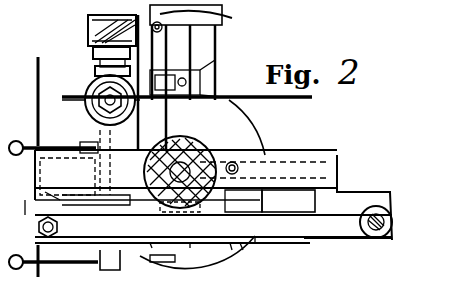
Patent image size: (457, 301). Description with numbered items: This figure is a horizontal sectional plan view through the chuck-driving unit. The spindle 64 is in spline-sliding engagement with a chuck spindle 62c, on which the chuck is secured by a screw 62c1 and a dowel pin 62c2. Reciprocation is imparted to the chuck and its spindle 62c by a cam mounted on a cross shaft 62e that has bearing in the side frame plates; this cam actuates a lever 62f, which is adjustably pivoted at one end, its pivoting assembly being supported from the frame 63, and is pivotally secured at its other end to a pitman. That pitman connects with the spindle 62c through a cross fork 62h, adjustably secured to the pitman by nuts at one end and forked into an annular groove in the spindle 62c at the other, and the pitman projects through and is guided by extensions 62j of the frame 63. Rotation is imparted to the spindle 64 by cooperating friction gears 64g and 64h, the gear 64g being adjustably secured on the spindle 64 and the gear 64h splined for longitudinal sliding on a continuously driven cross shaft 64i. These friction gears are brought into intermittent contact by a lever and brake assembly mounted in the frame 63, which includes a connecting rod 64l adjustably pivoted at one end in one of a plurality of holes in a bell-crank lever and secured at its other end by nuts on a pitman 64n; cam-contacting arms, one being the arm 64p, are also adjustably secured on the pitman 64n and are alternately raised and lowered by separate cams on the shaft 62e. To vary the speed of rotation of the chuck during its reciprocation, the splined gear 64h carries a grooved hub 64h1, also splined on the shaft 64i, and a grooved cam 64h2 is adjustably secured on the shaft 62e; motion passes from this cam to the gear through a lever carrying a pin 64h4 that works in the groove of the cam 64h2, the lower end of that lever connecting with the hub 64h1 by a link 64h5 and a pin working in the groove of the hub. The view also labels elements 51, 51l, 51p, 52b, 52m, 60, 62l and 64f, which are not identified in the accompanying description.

The upright support 51 is at (180, 77).
The support arm 51l is at (35, 210).
The nut 51p is at (40, 236).
The vertical rod 52b is at (36, 92).
The handle rod 52m is at (62, 146).
The base 60 is at (243, 300).
The chuck spindle 62c is at (225, 149).
The screw 62c1 is at (195, 270).
The dowel pin 62c2 is at (163, 269).
The cross shaft 62e is at (110, 270).
The lever 62f is at (272, 249).
The cross fork 62h is at (288, 201).
The extensions 62j is at (376, 192).
The housing lug 62l is at (234, 300).
The frame 63 is at (337, 170).
The spindle 64 is at (180, 174).
The gear carrier 64f is at (243, 201).
The friction gear 64g is at (262, 130).
The friction gear 64h is at (312, 98).
The grooved hub 64h1 is at (216, 60).
The grooved cam 64h2 is at (88, 25).
The pin 64h4 is at (93, 51).
The link 64h5 is at (95, 65).
The cross shaft 64i is at (248, 245).
The connecting rod 64l is at (160, 262).
The pitman 64n is at (55, 185).
The cam-contacting arm 64p is at (96, 188).